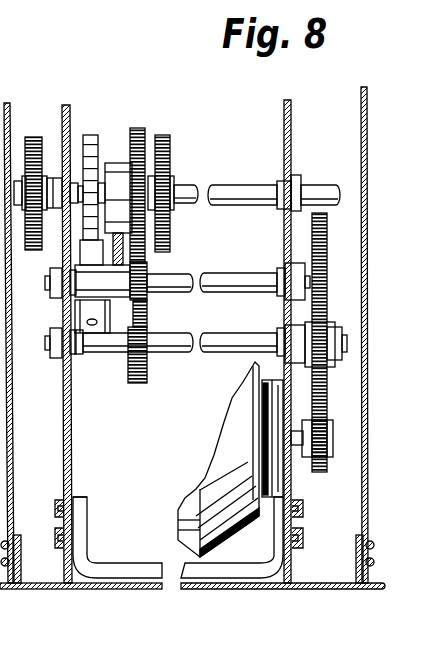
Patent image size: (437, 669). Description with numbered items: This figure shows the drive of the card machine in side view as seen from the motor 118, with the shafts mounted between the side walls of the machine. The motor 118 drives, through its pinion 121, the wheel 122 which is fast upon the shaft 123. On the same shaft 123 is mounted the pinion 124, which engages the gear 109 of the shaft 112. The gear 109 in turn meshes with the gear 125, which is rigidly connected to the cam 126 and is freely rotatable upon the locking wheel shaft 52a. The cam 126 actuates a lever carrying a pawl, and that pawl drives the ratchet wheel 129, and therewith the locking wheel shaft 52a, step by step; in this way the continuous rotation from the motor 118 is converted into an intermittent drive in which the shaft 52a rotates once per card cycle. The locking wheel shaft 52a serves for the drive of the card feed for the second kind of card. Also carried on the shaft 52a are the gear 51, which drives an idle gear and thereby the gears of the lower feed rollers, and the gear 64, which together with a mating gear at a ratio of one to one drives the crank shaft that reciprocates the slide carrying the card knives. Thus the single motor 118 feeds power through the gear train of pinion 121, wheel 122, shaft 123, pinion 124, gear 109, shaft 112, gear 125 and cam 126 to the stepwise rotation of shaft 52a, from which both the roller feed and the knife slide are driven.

The gear 51 is at (32, 136).
The ratchet wheel 129 is at (91, 134).
The gear 125 is at (138, 127).
The cam 126 is at (119, 160).
The gear 64 is at (163, 134).
The locking wheel shaft 52a is at (236, 186).
The shaft 112 is at (240, 273).
The gear 109 is at (149, 292).
The shaft 123 is at (181, 353).
The pinion 124 is at (134, 383).
The wheel 122 is at (322, 382).
The pinion 121 is at (322, 470).
The motor 118 is at (221, 548).